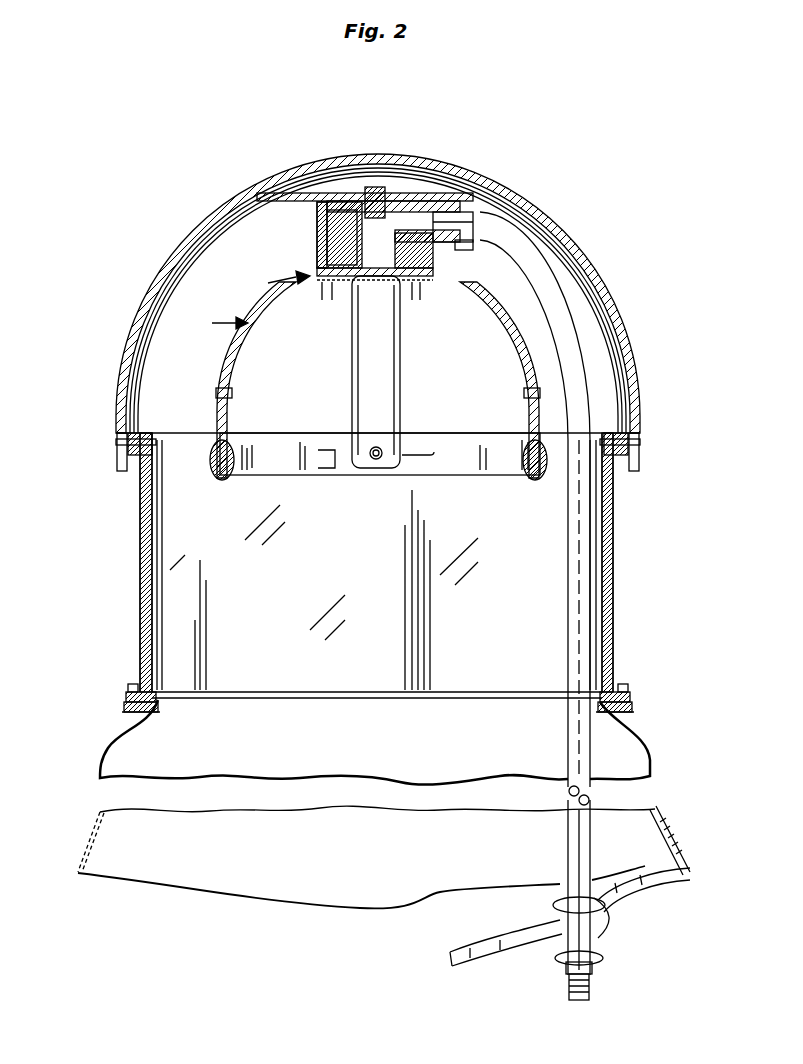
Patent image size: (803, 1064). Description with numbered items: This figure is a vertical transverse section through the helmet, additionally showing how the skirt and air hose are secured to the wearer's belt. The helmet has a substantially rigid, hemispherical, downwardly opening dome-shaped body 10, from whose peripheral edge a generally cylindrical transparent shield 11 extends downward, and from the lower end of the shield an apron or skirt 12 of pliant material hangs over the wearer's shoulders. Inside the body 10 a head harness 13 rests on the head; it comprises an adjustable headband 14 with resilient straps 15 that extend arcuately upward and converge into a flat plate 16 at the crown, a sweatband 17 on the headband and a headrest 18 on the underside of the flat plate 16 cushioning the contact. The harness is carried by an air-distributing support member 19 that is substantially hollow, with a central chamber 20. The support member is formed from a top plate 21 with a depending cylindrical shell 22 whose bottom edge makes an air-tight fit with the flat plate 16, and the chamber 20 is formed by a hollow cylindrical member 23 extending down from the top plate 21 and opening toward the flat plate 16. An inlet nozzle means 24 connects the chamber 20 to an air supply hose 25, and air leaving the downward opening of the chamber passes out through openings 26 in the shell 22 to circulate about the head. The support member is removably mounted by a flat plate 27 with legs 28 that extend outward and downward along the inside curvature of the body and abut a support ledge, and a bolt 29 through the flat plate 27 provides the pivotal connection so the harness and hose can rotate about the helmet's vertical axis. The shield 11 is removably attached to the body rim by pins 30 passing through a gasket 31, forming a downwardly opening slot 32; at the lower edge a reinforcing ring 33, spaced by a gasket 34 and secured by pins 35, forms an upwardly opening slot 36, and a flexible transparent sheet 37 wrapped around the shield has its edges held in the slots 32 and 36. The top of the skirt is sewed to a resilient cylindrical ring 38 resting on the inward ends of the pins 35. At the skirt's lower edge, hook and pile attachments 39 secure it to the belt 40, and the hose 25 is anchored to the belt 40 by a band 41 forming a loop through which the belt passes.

The dome-shaped body 10 is at (128, 318).
The transparent shield 11 is at (140, 540).
The apron or skirt 12 is at (105, 762).
The head harness 13 is at (216, 323).
The adjustable headband 14 is at (262, 450).
The straps 15 is at (242, 348).
The flat plate 16 is at (322, 282).
The sweatband 17 is at (226, 478).
The headrest 18 is at (375, 286).
The air-distributing support member 19 is at (276, 284).
The chamber 20 is at (350, 276).
The top plate 21 is at (322, 194).
The cylindrical shell 22 is at (317, 220).
The cylindrical member 23 is at (355, 202).
The inlet nozzle means 24 is at (445, 240).
The air supply hose 25 is at (537, 252).
The openings 26 is at (320, 240).
The flat plate 27 is at (400, 201).
The legs 28 is at (566, 262).
The bolt 29 is at (378, 187).
The pins 30 is at (124, 442).
The gasket 31 is at (128, 450).
The slot 32 is at (126, 466).
The reinforcing ring 33 is at (128, 698).
The gasket 34 is at (142, 708).
The pins 35 is at (126, 704).
The slot 36 is at (142, 688).
The flexible sheet 37 is at (140, 624).
The cylindrical ring 38 is at (158, 696).
The attachment 39 is at (660, 850).
The belt 40 is at (628, 905).
The band 41 is at (610, 950).